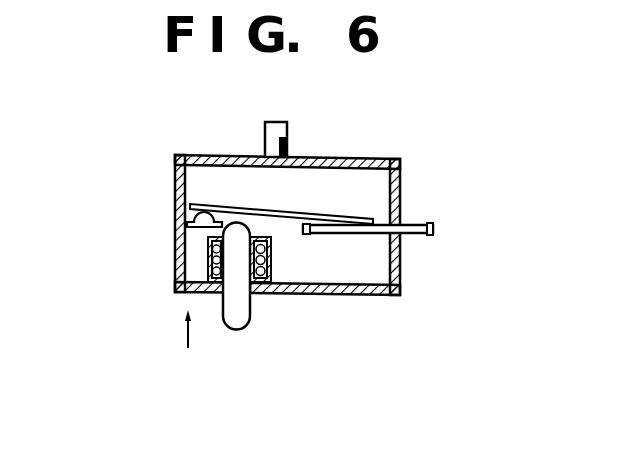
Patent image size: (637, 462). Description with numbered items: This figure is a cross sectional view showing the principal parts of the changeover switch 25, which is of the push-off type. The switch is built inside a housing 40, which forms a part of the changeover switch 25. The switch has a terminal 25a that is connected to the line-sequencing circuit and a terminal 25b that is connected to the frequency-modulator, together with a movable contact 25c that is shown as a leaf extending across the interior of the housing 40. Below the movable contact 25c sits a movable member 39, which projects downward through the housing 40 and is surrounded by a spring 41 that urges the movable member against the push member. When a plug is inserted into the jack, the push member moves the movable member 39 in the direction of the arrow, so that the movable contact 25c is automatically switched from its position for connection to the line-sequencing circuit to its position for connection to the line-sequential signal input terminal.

The changeover switch 25 is at (154, 186).
The terminal 25a is at (288, 136).
The terminal 25b is at (428, 224).
The movable contact 25c is at (240, 196).
The movable member 39 is at (247, 326).
The housing 40 is at (384, 160).
The spring 41 is at (195, 262).